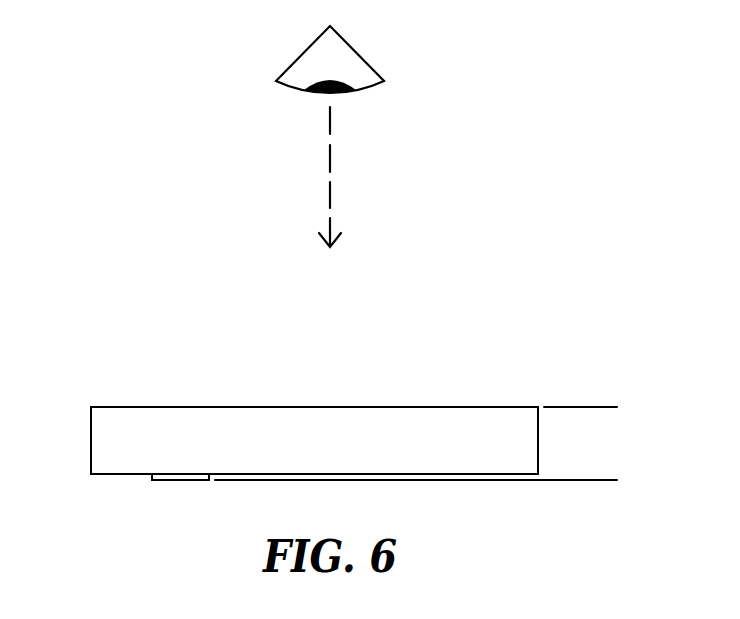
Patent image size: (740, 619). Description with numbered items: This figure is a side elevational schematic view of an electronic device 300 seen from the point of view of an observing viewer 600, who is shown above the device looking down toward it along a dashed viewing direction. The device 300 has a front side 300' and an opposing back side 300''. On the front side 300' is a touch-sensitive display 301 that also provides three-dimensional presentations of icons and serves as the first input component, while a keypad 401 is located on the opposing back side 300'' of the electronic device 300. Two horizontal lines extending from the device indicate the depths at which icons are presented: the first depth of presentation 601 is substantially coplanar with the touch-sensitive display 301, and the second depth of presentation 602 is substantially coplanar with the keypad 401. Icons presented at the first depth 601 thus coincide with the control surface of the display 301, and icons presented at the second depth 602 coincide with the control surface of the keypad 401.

The observing viewer 600 is at (309, 46).
The electronic device 300 is at (287, 438).
The front side 300' is at (176, 389).
The back side 300'' is at (75, 493).
The touch-sensitive display 301 is at (333, 406).
The keypad 401 is at (182, 481).
The first depth of presentation 601 is at (580, 405).
The second depth of presentation 602 is at (580, 482).